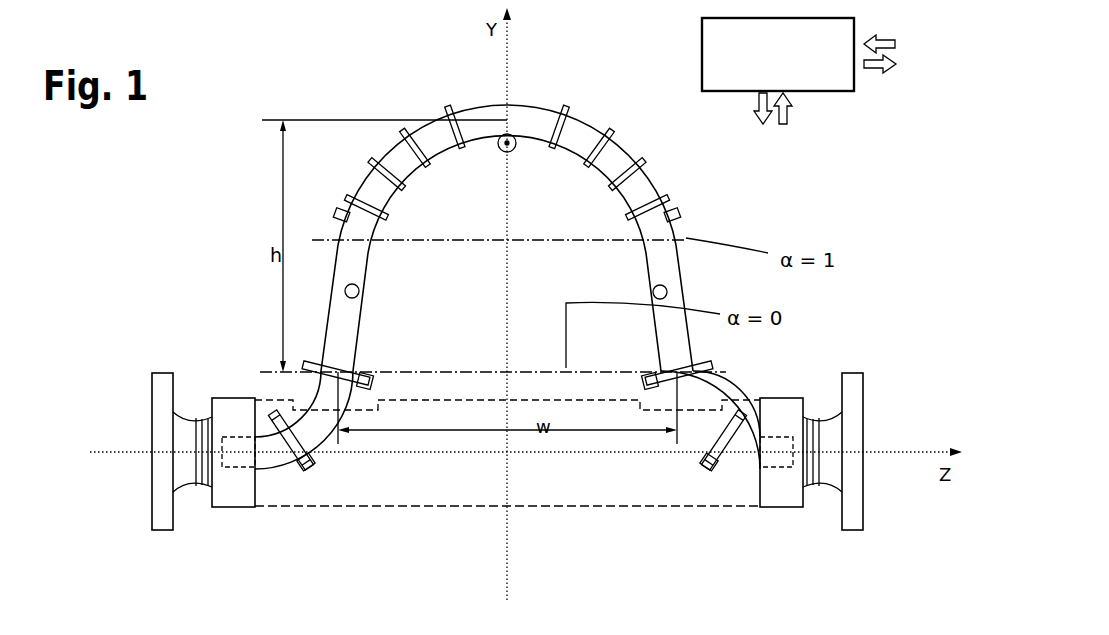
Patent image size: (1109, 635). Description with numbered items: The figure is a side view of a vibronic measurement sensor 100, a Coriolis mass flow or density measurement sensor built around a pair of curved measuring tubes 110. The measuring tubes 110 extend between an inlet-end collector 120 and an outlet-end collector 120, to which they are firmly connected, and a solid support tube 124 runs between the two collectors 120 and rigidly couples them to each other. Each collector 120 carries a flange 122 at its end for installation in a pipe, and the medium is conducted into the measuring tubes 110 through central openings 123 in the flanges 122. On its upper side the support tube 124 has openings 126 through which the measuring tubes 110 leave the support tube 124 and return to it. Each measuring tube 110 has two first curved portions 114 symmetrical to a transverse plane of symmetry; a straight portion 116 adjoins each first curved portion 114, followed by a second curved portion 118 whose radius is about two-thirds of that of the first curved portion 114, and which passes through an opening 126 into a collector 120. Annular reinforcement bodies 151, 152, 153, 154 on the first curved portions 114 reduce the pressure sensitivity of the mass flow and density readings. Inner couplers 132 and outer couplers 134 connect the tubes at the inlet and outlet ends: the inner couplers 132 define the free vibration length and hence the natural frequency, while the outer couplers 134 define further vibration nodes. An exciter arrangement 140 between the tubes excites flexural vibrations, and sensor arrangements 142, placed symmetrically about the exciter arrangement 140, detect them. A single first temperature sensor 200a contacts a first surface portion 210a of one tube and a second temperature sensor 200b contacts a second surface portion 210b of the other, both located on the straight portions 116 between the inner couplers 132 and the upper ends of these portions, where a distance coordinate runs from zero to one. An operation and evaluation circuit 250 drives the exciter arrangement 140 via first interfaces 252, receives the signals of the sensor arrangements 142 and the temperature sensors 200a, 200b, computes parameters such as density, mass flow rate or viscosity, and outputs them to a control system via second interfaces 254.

The measurement sensor 100 is at (262, 75).
The measuring tube 110 is at (498, 287).
The first curved portion 114 is at (403, 169).
The straight portion 116 is at (337, 333).
The second curved portion 118 is at (277, 462).
The collector 120 is at (222, 508).
The flange 122 is at (157, 531).
The central opening 123 is at (148, 452).
The support tube 124 is at (432, 509).
The opening 126 is at (300, 403).
The inner coupler 132 is at (364, 372).
The outer coupler 134 is at (311, 468).
The exciter arrangement 140 is at (517, 168).
The sensor arrangement 142 is at (337, 212).
The annular reinforcement body 151 is at (450, 110).
The annular reinforcement body 152 is at (403, 133).
The annular reinforcement body 153 is at (373, 163).
The annular reinforcement body 154 is at (345, 200).
The first temperature sensor 200a is at (243, 278).
The first surface portion 210a is at (345, 290).
The second temperature sensor 200b is at (802, 292).
The second surface portion 210b is at (667, 292).
The operation and evaluation circuit 250 is at (778, 54).
The first interface 252 is at (790, 128).
The second interface 254 is at (866, 76).